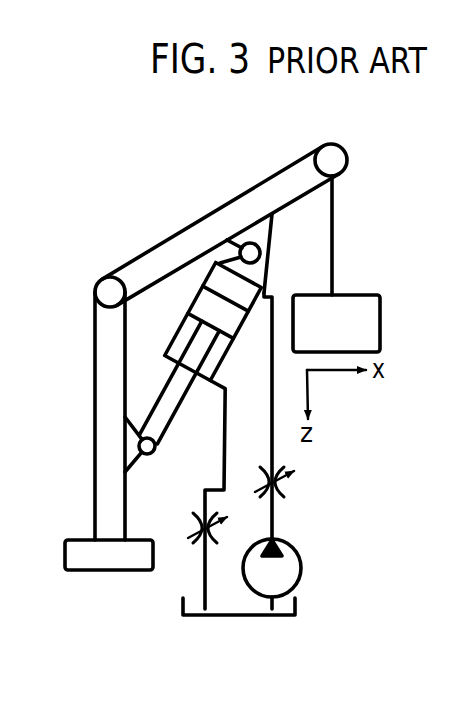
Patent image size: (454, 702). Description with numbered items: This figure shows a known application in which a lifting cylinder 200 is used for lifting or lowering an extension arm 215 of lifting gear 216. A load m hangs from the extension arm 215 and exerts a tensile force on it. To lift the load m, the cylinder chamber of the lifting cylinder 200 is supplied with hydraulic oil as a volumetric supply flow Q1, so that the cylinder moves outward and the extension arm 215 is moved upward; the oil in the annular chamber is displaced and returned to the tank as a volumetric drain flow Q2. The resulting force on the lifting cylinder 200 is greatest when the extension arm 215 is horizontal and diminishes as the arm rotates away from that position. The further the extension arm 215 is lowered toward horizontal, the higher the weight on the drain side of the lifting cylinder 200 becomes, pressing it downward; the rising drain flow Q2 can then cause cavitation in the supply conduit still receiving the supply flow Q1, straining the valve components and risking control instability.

The extension arm 215 is at (147, 257).
The lifting cylinder 200 is at (205, 290).
The lifting gear 216 is at (82, 325).
The volumetric supply flow Q1 is at (291, 486).
The volumetric drain flow Q2 is at (194, 525).
The load m is at (336, 264).